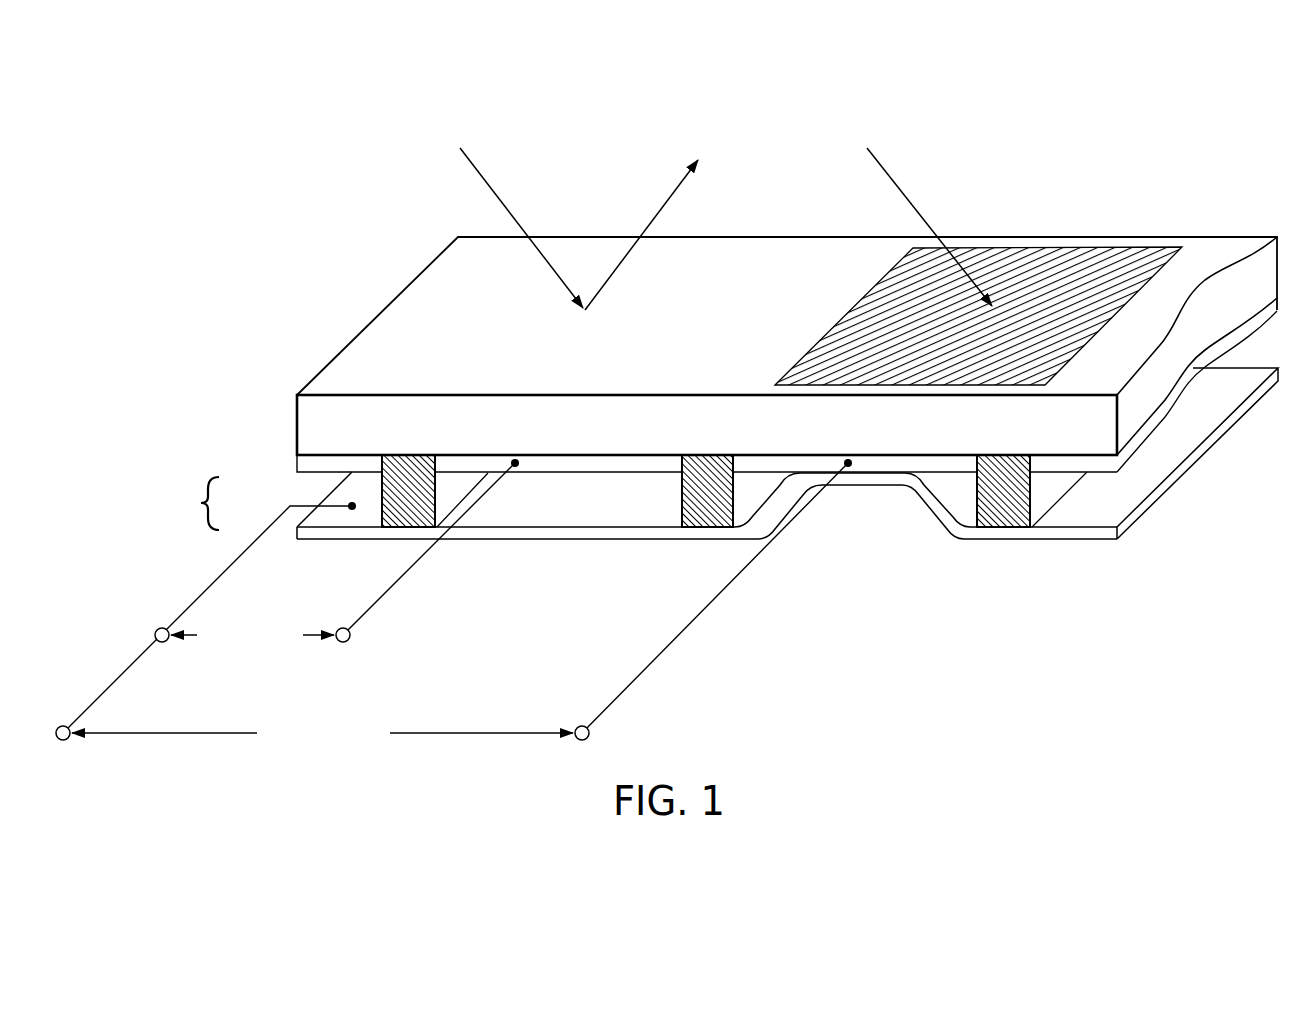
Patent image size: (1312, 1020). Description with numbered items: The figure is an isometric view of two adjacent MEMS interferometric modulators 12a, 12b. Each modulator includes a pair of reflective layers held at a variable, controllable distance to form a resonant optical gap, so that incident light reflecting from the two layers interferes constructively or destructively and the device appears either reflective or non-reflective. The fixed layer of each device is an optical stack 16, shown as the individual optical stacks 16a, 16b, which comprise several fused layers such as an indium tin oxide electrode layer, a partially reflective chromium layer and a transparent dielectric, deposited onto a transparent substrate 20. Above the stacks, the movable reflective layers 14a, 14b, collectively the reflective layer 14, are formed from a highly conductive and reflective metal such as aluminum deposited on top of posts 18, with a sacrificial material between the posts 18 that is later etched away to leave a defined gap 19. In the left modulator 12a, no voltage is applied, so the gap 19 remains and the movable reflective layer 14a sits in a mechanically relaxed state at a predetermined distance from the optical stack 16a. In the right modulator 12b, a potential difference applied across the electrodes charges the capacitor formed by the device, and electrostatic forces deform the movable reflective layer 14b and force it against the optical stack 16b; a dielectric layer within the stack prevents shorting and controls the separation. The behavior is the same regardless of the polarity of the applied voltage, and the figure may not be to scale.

The interferometric modulator 12a is at (450, 333).
The interferometric modulator 12b is at (1065, 282).
The movable reflective layer 14 is at (1120, 533).
The movable reflective layer 14a is at (458, 533).
The movable reflective layer 14b is at (773, 500).
The optical stack 16 is at (297, 467).
The optical stack 16a is at (550, 463).
The optical stack 16b is at (815, 465).
The posts 18 is at (410, 515).
The gap 19 is at (452, 612).
The transparent substrate 20 is at (1177, 340).